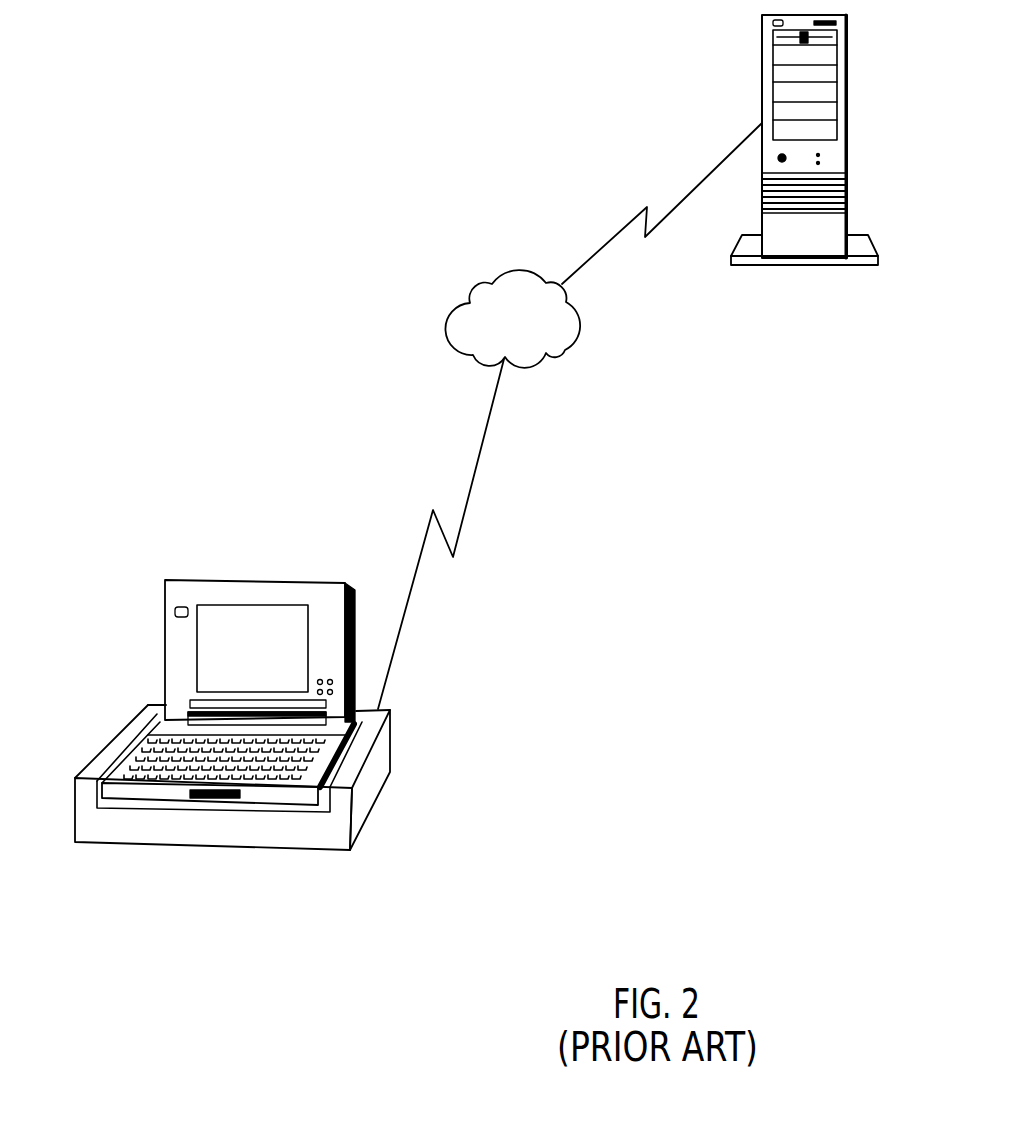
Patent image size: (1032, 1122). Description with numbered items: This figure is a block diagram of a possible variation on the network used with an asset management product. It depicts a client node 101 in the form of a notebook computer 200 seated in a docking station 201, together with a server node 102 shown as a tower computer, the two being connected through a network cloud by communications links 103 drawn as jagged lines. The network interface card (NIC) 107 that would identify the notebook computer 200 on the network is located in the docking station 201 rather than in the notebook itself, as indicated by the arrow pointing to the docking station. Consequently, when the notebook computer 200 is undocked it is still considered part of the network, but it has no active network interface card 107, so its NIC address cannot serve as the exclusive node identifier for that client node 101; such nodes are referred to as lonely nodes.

The client node 101 is at (313, 712).
The server node 102 is at (758, 183).
The communications link 103 is at (570, 412).
The network interface card 107 is at (462, 727).
The notebook computer 200 is at (198, 642).
The docking station 201 is at (222, 825).